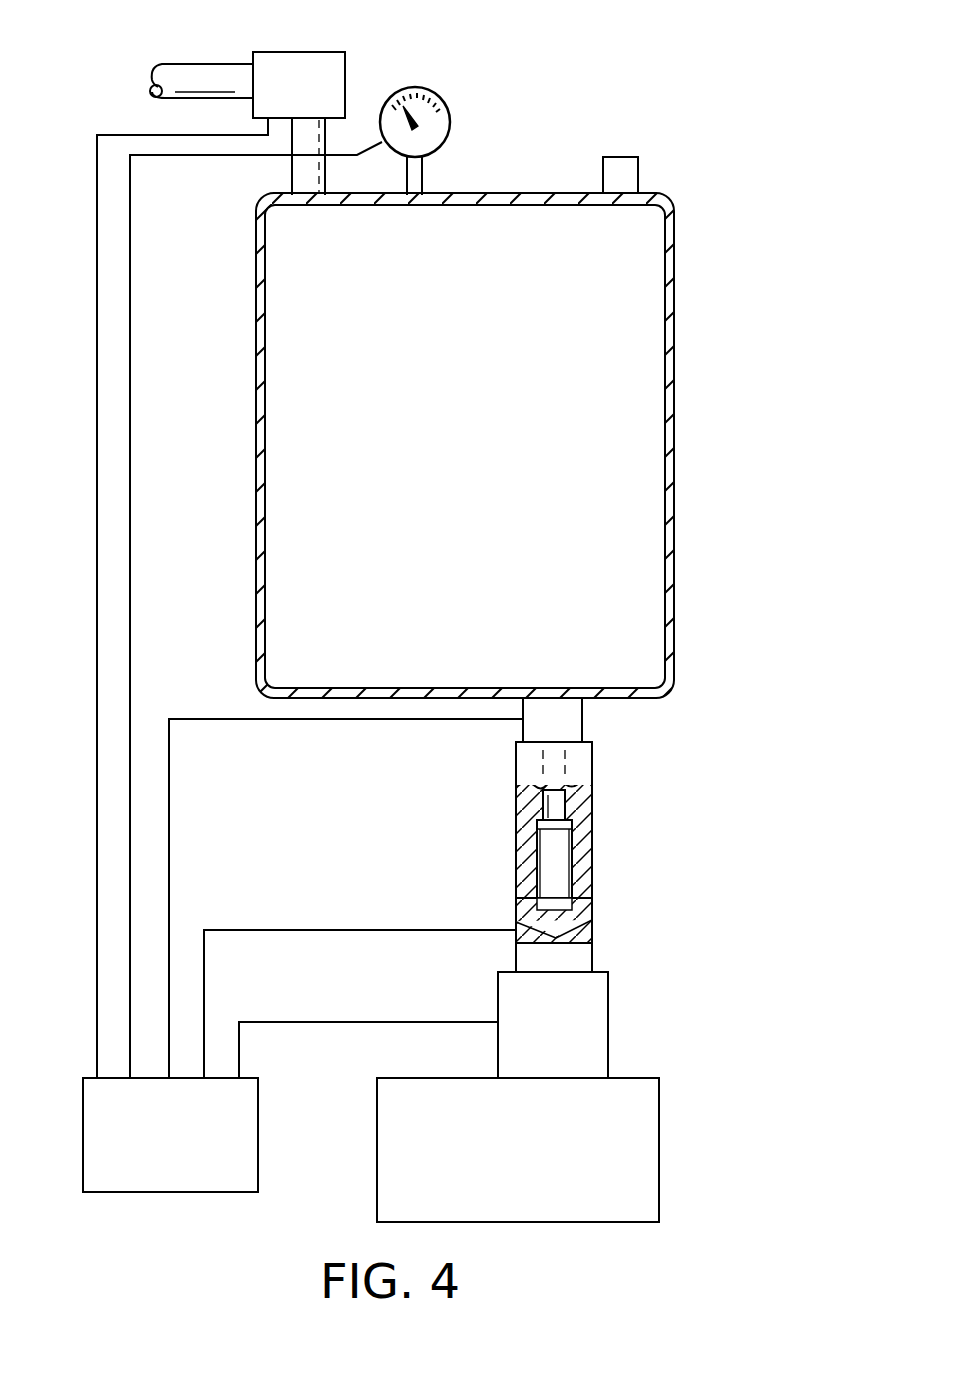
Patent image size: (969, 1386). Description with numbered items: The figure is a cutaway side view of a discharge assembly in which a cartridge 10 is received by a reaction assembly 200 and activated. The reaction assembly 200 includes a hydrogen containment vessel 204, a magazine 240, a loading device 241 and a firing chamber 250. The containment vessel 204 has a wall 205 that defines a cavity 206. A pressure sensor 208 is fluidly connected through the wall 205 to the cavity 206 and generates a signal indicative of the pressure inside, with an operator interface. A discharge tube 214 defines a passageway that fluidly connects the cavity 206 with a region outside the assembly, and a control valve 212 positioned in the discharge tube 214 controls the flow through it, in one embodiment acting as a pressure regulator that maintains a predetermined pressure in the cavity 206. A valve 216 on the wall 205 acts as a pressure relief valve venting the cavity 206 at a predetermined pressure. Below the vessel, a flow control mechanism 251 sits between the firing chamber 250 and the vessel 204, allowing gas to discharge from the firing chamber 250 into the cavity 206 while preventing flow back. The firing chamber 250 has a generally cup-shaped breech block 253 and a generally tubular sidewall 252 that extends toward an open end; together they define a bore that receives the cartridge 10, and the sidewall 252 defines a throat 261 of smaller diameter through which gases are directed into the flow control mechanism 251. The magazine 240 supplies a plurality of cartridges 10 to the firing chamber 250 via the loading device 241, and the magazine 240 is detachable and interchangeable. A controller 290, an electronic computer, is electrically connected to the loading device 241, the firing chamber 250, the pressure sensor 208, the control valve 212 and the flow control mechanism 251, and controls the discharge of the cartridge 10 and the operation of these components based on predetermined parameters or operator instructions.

The reaction assembly 200 is at (722, 441).
The hydrogen containment vessel 204 is at (676, 322).
The wall 205 is at (260, 470).
The cavity 206 is at (294, 393).
The pressure sensor 208 is at (442, 102).
The control valve 212 is at (308, 65).
The discharge tube 214 is at (190, 75).
The valve 216 is at (628, 172).
The firing chamber 250 is at (598, 877).
The flow control mechanism 251 is at (575, 724).
The sidewall 252 is at (524, 835).
The breech block 253 is at (590, 927).
The throat 261 is at (560, 805).
The cartridge 10 is at (570, 858).
The loading device 241 is at (598, 1042).
The magazine 240 is at (640, 1160).
The controller 290 is at (166, 1173).